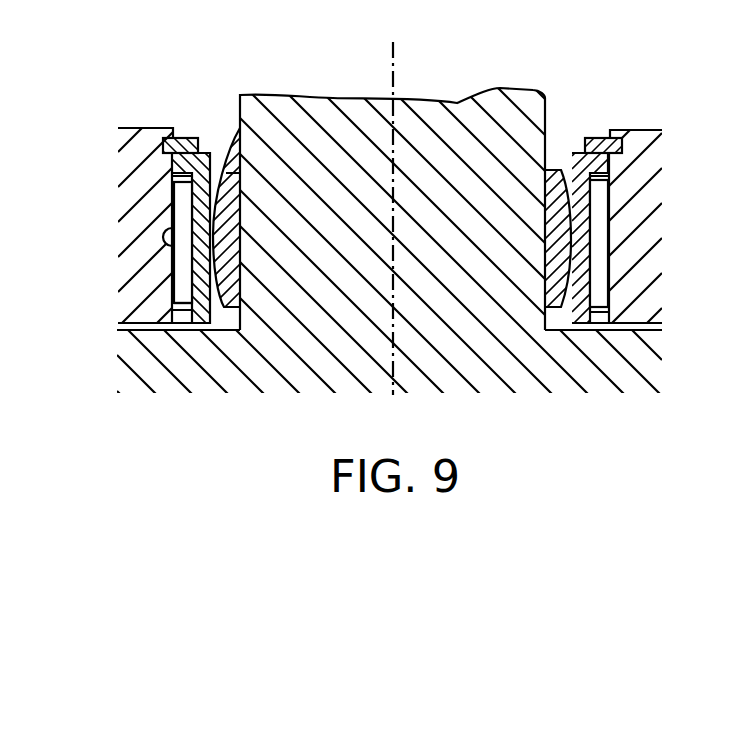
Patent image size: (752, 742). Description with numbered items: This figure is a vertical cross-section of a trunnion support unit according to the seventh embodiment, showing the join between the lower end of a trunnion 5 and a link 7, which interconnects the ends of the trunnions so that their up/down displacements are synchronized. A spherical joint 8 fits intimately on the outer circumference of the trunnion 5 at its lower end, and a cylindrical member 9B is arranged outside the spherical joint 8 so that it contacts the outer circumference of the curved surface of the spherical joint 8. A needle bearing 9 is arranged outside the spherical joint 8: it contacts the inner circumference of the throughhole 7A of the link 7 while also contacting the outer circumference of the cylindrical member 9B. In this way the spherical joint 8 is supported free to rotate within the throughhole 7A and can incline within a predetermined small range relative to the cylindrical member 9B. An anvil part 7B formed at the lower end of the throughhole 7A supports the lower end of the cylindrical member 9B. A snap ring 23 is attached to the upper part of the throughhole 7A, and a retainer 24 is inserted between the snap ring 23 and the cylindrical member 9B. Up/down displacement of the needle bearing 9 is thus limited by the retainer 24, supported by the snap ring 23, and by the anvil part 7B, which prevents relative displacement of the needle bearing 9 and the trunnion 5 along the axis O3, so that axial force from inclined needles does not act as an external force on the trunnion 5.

The trunnion 5 is at (360, 110).
The link 7 is at (130, 127).
The throughhole 7A is at (183, 233).
The anvil part 7B is at (207, 312).
The spherical joint 8 is at (241, 150).
The needle bearing 9 is at (182, 200).
The cylindrical member 9B is at (200, 310).
The snap ring 23 is at (185, 137).
The retainer 24 is at (203, 157).
The axis O3 is at (396, 58).